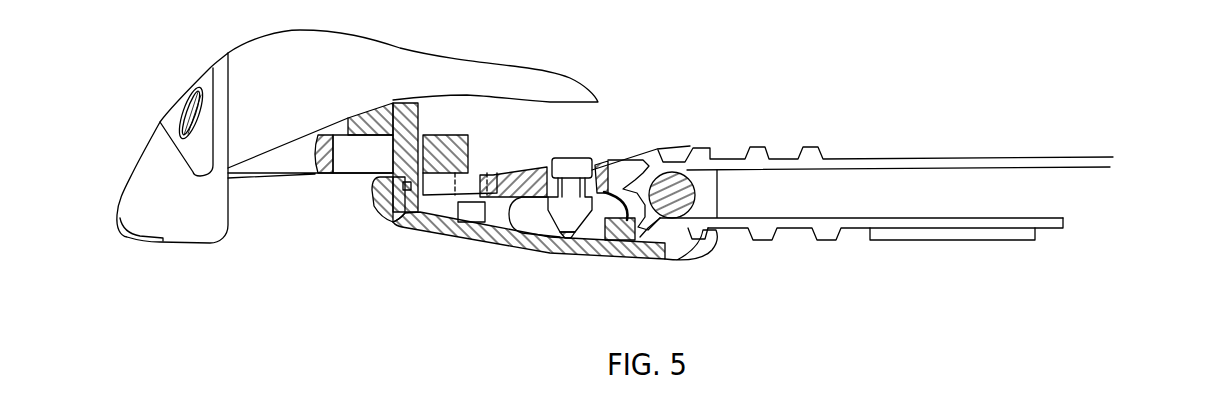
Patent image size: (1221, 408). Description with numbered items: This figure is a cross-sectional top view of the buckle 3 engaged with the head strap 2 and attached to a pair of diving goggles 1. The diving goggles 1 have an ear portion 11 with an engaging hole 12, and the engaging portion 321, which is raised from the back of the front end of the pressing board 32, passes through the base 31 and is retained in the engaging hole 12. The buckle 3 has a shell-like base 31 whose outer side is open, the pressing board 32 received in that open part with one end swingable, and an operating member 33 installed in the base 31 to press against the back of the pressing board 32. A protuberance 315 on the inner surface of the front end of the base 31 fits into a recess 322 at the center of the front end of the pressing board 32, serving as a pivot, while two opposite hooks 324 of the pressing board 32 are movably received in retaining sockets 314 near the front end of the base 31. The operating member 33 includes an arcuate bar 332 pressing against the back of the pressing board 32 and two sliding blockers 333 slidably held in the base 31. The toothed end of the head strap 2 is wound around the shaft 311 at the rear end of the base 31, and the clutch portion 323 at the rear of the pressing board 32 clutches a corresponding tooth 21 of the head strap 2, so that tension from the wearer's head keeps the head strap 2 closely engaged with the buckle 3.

The diving goggles 1 is at (213, 210).
The head strap 2 is at (920, 157).
The buckle 3 is at (558, 267).
The ear portion 11 is at (443, 140).
The engaging hole 12 is at (348, 165).
The teeth 21 is at (673, 247).
The base 31 is at (378, 195).
The pressing board 32 is at (492, 242).
The operating member 33 is at (542, 210).
The shaft 311 is at (672, 180).
The retaining socket 314 is at (505, 178).
The protuberance 315 is at (397, 216).
The engaging portion 321 is at (367, 117).
The recess 322 is at (406, 192).
The clutch portion 323 is at (638, 240).
The hook 324 is at (463, 215).
The arcuate bar 332 is at (568, 240).
The sliding blocker 333 is at (577, 167).